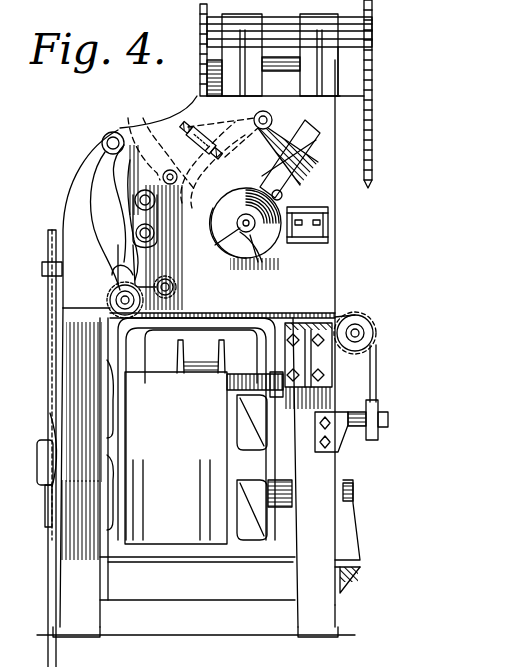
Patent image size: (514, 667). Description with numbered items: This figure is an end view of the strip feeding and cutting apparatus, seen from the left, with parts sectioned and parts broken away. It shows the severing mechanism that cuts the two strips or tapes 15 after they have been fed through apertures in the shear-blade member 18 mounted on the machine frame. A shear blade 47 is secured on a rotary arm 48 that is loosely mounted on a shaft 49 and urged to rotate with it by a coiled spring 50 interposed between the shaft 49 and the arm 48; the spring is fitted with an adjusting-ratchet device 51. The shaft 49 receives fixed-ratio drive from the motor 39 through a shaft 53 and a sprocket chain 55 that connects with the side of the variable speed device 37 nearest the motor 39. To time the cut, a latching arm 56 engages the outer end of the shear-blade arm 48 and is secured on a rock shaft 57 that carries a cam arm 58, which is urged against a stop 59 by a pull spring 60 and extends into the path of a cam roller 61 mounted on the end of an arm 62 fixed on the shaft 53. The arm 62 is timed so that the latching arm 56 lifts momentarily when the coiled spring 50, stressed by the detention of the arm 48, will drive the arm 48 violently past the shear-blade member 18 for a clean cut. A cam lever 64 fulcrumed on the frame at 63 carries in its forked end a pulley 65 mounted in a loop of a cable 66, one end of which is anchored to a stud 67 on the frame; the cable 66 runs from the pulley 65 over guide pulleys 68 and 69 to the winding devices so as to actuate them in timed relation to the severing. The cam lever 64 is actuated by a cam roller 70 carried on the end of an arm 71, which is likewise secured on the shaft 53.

The strips or tapes 15 is at (320, 225).
The shear-blade member 18 is at (305, 240).
The variable speed device 37 is at (177, 356).
The motor 39 is at (176, 458).
The shear blade 47 is at (300, 188).
The rotary arm 48 is at (290, 180).
The shaft 49 is at (252, 248).
The coiled spring 50 is at (257, 196).
The adjusting-ratchet device 51 is at (236, 229).
The shaft 53 is at (136, 200).
The sprocket chain 55 is at (50, 335).
The latching arm 56 is at (287, 138).
The rock shaft 57 is at (273, 118).
The cam arm 58 is at (213, 165).
The stop 59 is at (223, 131).
The pull spring 60 is at (183, 148).
The cam roller 61 is at (161, 144).
The arm 62 is at (133, 127).
The fulcrum 63 is at (104, 139).
The cam lever 64 is at (93, 170).
The pulley 65 is at (116, 312).
The cable 66 is at (116, 277).
The stud 67 is at (178, 295).
The guide pulley 68 is at (362, 316).
The guide pulley 69 is at (377, 437).
The cam roller 70 is at (118, 246).
The arm 71 is at (137, 216).